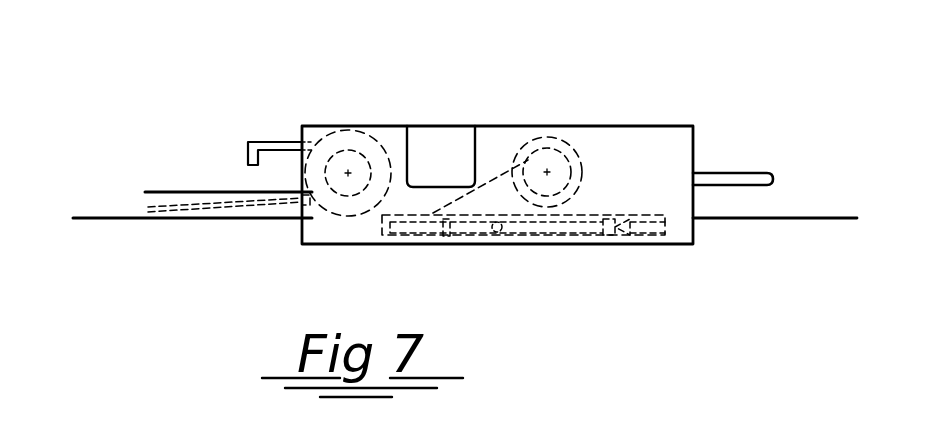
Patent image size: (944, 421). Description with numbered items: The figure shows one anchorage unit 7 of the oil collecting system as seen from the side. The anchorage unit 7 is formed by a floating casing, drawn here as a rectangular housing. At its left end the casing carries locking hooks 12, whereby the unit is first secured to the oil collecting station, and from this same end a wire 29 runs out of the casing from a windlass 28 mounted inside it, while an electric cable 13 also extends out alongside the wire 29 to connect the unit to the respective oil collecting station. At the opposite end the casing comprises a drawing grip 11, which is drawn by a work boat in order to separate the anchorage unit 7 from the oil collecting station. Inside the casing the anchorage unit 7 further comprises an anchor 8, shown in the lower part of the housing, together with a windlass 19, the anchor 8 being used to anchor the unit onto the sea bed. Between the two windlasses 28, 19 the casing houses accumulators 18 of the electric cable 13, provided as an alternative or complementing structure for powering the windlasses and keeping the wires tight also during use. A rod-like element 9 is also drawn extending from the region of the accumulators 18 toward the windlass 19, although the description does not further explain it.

The anchorage unit 7 is at (623, 145).
The anchor 8 is at (545, 227).
The rod 9 is at (490, 185).
The drawing grip 11 is at (720, 180).
The locking hooks 12 is at (250, 142).
The electric cable 13 is at (218, 200).
The accumulators 18 is at (443, 147).
The windlass 19 is at (546, 135).
The windlass 28 is at (365, 130).
The wire 29 is at (188, 192).